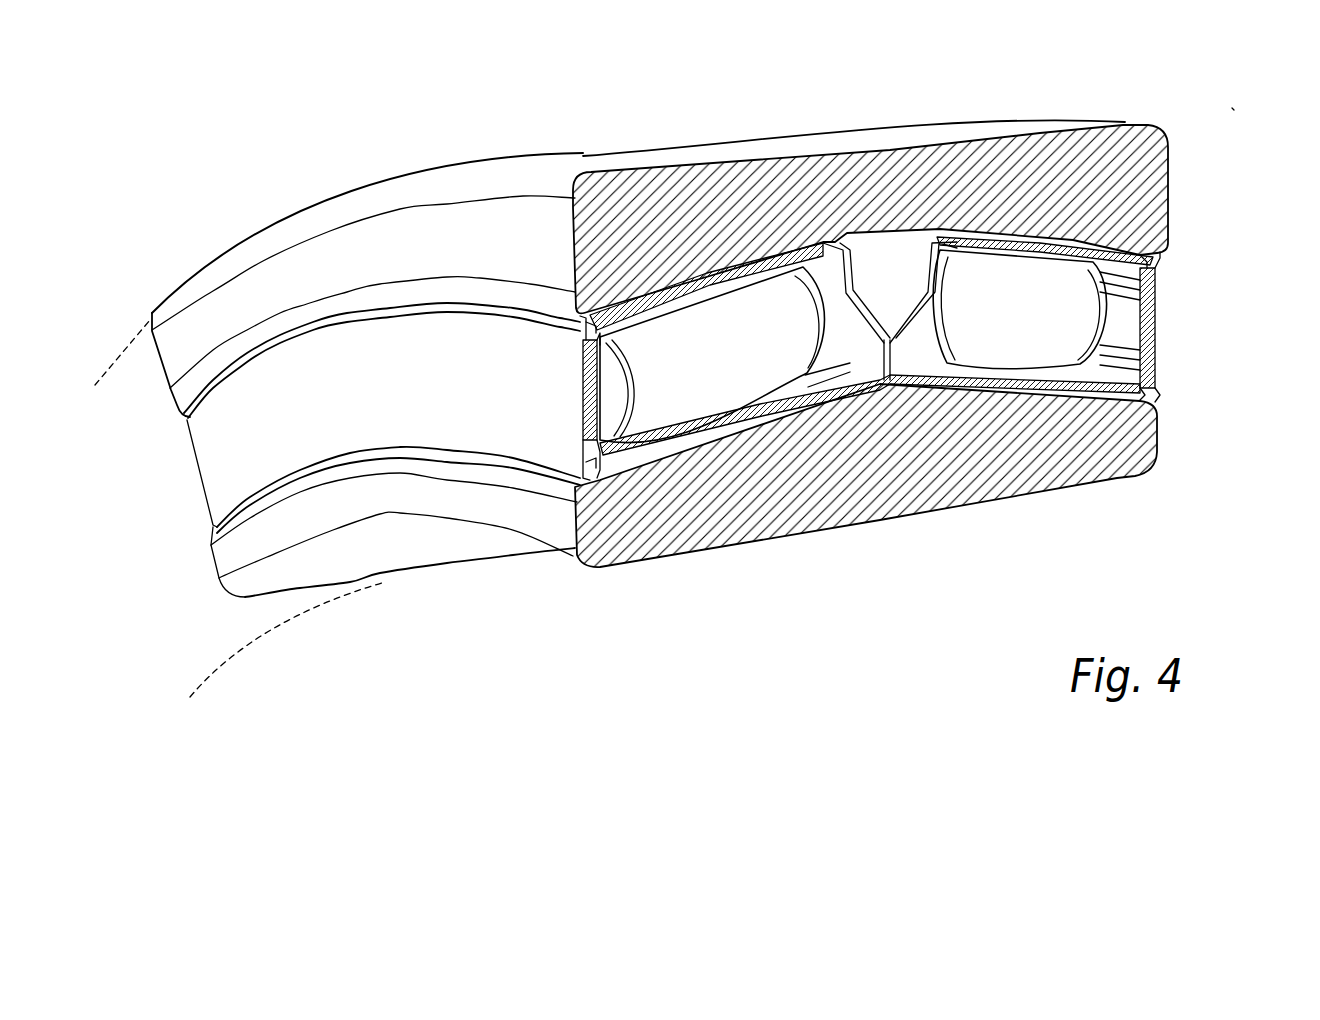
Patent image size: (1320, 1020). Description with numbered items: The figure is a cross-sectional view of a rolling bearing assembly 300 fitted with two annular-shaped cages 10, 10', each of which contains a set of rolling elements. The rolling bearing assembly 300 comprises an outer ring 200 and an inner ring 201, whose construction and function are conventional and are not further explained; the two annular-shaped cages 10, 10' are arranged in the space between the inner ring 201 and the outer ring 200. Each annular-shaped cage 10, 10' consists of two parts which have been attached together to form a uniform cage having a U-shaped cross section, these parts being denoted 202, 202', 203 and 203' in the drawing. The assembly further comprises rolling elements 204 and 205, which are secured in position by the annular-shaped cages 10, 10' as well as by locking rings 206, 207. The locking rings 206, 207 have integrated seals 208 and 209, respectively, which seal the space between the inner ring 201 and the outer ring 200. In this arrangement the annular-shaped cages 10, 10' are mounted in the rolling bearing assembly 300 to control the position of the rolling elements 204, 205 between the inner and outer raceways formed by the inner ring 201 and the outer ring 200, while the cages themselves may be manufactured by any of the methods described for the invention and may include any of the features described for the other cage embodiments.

The annular-shaped cage 10 is at (611, 260).
The annular-shaped cage 10' is at (1044, 213).
The outer ring 200 is at (405, 176).
The inner ring 201 is at (1117, 478).
The cage part 202 is at (716, 198).
The cage part 202' is at (870, 480).
The cage part 203 is at (890, 212).
The cage part 203' is at (946, 442).
The rolling element 204 is at (725, 340).
The rolling element 205 is at (1010, 297).
The locking ring 206 is at (465, 422).
The locking ring 207 is at (1155, 325).
The integrated seal 208 is at (506, 317).
The integrated seal 209 is at (1153, 257).
The rolling bearing assembly 300 is at (1225, 118).